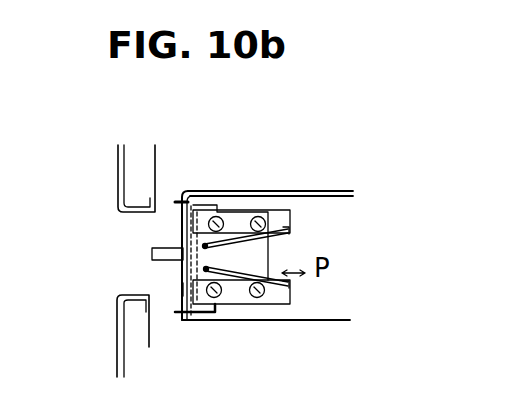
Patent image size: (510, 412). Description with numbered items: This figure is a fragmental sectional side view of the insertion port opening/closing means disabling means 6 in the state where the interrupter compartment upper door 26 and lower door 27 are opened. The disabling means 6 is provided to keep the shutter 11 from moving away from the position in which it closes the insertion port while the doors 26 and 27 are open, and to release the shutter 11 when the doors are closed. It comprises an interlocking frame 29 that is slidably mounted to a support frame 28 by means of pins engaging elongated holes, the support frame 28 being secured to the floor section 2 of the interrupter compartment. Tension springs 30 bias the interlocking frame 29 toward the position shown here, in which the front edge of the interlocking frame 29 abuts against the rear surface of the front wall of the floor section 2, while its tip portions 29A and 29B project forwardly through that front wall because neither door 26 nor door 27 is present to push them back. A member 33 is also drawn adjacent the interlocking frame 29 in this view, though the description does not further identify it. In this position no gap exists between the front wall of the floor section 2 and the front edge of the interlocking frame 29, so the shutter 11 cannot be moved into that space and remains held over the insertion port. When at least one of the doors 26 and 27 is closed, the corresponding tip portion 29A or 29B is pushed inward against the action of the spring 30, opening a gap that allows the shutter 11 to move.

The floor section 2 is at (347, 190).
The insertion port opening/closing means disabling means 6 is at (318, 186).
The shutter 11 is at (182, 288).
The interrupter compartment upper door 26 is at (118, 172).
The interrupter compartment lower door 27 is at (113, 338).
The support frame 28 is at (242, 310).
The interlocking frame 29 is at (285, 212).
The tip portion 29A is at (177, 200).
The tip portion 29B is at (177, 321).
The tension spring 30 is at (240, 214).
The pin 33 is at (152, 253).